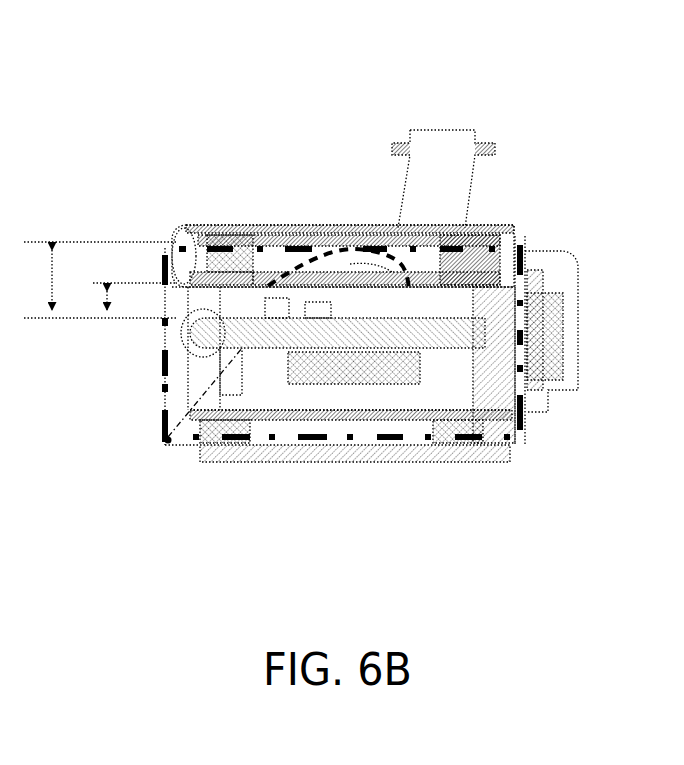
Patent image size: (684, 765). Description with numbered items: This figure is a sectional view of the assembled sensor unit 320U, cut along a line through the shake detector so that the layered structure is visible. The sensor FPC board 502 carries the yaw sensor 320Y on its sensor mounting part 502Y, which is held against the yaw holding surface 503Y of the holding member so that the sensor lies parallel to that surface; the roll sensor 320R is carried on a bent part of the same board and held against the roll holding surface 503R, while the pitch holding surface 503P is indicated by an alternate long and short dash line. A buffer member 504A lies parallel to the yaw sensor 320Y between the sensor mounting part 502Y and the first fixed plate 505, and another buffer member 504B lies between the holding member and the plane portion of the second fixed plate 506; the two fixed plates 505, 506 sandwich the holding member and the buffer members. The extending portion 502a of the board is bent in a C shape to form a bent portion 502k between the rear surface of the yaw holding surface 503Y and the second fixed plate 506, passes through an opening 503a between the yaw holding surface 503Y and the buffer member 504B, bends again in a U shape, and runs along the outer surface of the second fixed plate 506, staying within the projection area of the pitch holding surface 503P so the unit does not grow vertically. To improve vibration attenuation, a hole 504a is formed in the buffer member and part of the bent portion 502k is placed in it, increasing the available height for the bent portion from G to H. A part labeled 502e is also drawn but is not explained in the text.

The sensor unit 320U is at (242, 178).
The roll sensor 320R is at (568, 340).
The yaw sensor 320Y is at (418, 463).
The second fixed plate 506 is at (249, 226).
The sensor FPC board 502 is at (362, 228).
The extending portion 502a is at (331, 226).
The spring end portion 502e is at (457, 145).
The bent portion 502k is at (472, 228).
The sensor mounting part 502Y is at (432, 352).
The opening 503a is at (176, 310).
The roll holding surface 503R is at (524, 246).
The pitch holding surface 503P is at (160, 382).
The yaw holding surface 503Y is at (310, 409).
The hole 504a is at (398, 228).
The buffer member 504A is at (228, 464).
The buffer member 504B is at (196, 248).
The first fixed plate 505 is at (325, 464).
The increased space height H is at (100, 280).
The original space height G is at (126, 300).